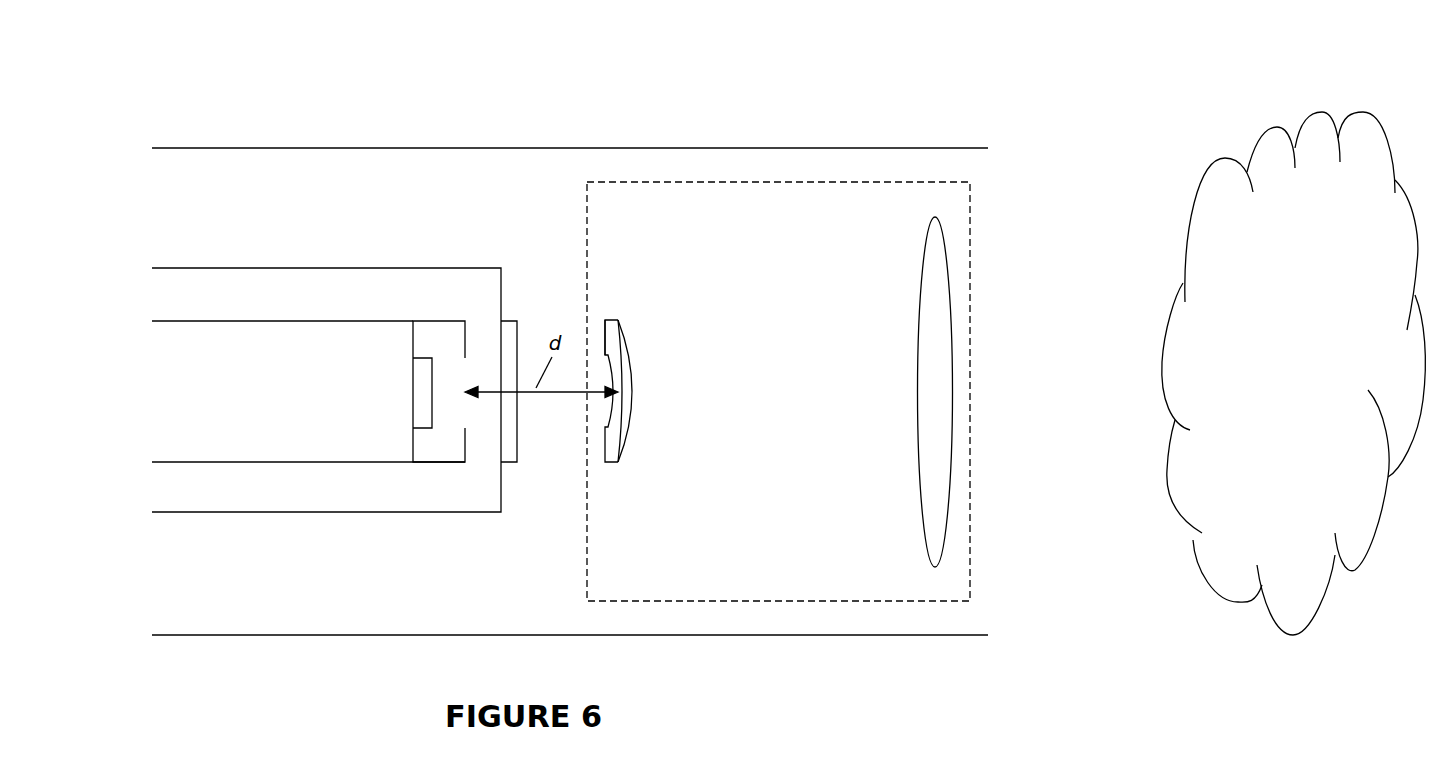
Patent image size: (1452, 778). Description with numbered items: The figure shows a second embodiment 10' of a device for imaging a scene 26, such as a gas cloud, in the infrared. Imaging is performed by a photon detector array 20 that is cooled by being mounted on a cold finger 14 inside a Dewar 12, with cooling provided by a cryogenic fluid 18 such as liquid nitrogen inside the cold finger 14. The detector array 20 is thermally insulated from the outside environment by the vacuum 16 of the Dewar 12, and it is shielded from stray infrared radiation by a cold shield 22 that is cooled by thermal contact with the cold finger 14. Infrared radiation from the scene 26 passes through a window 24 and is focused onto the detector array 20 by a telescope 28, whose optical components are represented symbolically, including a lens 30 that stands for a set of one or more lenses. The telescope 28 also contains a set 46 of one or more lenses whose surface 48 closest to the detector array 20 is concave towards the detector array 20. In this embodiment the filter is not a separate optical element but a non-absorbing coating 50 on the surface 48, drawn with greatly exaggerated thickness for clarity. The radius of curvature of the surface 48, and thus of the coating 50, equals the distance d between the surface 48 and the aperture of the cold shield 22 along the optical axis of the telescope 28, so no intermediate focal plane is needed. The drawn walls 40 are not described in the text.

The second embodiment of device 10' is at (1002, 74).
The Dewar 12 is at (308, 268).
The cold finger 14 is at (380, 321).
The vacuum 16 is at (282, 299).
The cryogenic fluid 18 is at (282, 415).
The photon detector array 20 is at (413, 410).
The cold shield 22 is at (430, 462).
The window 24 is at (517, 453).
The scene 26 is at (1294, 373).
The telescope 28 is at (812, 601).
The lens 30 is at (935, 303).
The tube walls 40 is at (308, 148).
The set of lenses 46 is at (638, 425).
The surface 48 is at (621, 373).
The non-absorbing coating 50 is at (605, 338).